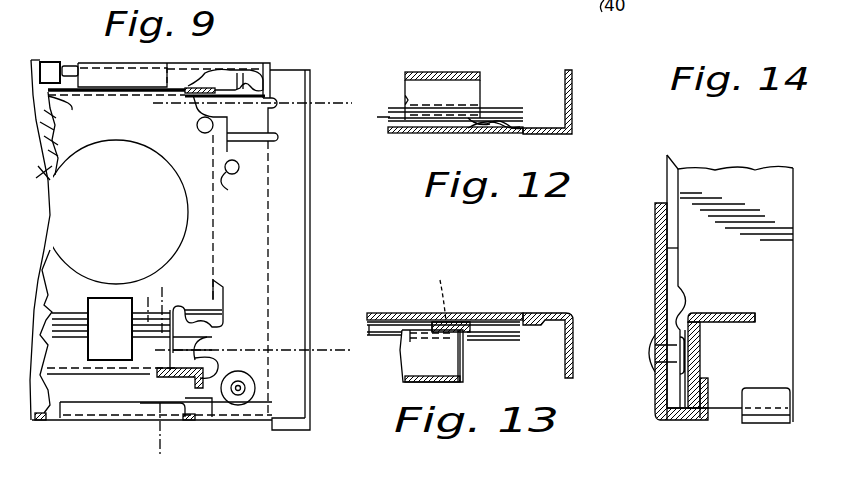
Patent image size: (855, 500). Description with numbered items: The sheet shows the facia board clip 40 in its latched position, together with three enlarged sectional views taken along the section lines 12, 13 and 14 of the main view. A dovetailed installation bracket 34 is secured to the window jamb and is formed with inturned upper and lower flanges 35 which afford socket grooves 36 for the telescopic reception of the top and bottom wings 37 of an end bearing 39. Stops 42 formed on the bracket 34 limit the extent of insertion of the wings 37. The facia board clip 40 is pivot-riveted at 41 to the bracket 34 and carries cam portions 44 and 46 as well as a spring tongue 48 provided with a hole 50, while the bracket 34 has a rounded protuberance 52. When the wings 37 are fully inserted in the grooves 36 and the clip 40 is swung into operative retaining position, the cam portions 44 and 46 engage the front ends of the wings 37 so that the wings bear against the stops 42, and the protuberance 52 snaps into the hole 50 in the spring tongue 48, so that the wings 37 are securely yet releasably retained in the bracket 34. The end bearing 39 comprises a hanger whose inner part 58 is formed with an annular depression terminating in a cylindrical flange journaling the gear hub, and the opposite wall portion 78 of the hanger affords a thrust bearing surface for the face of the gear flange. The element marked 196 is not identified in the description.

In FIG. 9, the section line 12— 12 is at (165, 104).
In FIG. 9, the section line 13— 13 is at (148, 322).
In FIG. 9, the section line 14— 14 is at (187, 293).
In FIG. 9, the dovetailed installation bracket 34 is at (33, 60).
In FIG. 12, the dovetailed installation bracket 34 is at (416, 135).
In FIG. 13, the dovetailed installation bracket 34 is at (412, 311).
In FIG. 14, the dovetailed installation bracket 34 is at (654, 262).
In FIG. 9, the inturned upper and lower flanges 35 is at (148, 52).
In FIG. 12, the inturned upper and lower flanges 35 is at (510, 136).
In FIG. 13, the inturned upper and lower flanges 35 is at (377, 338).
In FIG. 14, the inturned upper and lower flanges 35 is at (710, 400).
In FIG. 9, the socket grooves 36 is at (184, 63).
In FIG. 12, the socket grooves 36 is at (505, 116).
In FIG. 13, the socket grooves 36 is at (490, 341).
In FIG. 14, the socket grooves 36 is at (688, 418).
In FIG. 9, the top and bottom wings 37 is at (70, 73).
In FIG. 12, the top and bottom wings 37 is at (456, 92).
In FIG. 13, the top and bottom wings 37 is at (402, 360).
In FIG. 14, the top and bottom wings 37 is at (700, 364).
In FIG. 9, the end bearing 39 is at (56, 138).
In FIG. 12, the end bearing 39 is at (456, 72).
In FIG. 13, the end bearing 39 is at (414, 383).
In FIG. 14, the end bearing 39 is at (734, 311).
In FIG. 9, the facia board clip 40 is at (315, 250).
In FIG. 12, the facia board clip 40 is at (576, 118).
In FIG. 13, the facia board clip 40 is at (566, 311).
In FIG. 14, the facia board clip 40 is at (726, 166).
In FIG. 9, the pivot rivet 41 is at (252, 382).
In FIG. 14, the pivot rivet 41 is at (652, 352).
In FIG. 9, the stops 42 is at (50, 70).
In FIG. 9, the cam portion 44 is at (232, 82).
In FIG. 12, the cam portion 44 is at (490, 128).
In FIG. 9, the cam portion 46 is at (218, 368).
In FIG. 13, the cam portion 46 is at (460, 322).
In FIG. 14, the cam portion 46 is at (690, 300).
In FIG. 9, the spring tongue 48 is at (265, 168).
In FIG. 13, the spring tongue 48 is at (447, 295).
In FIG. 9, the hole 50 is at (224, 175).
In FIG. 9, the rounded protuberance 52 is at (225, 155).
In FIG. 9, the inner part 58 is at (72, 108).
In FIG. 14, the inner part 58 is at (752, 311).
In FIG. 9, the opposite wall portion 78 is at (46, 176).
In FIG. 9, the latch 196 is at (207, 350).